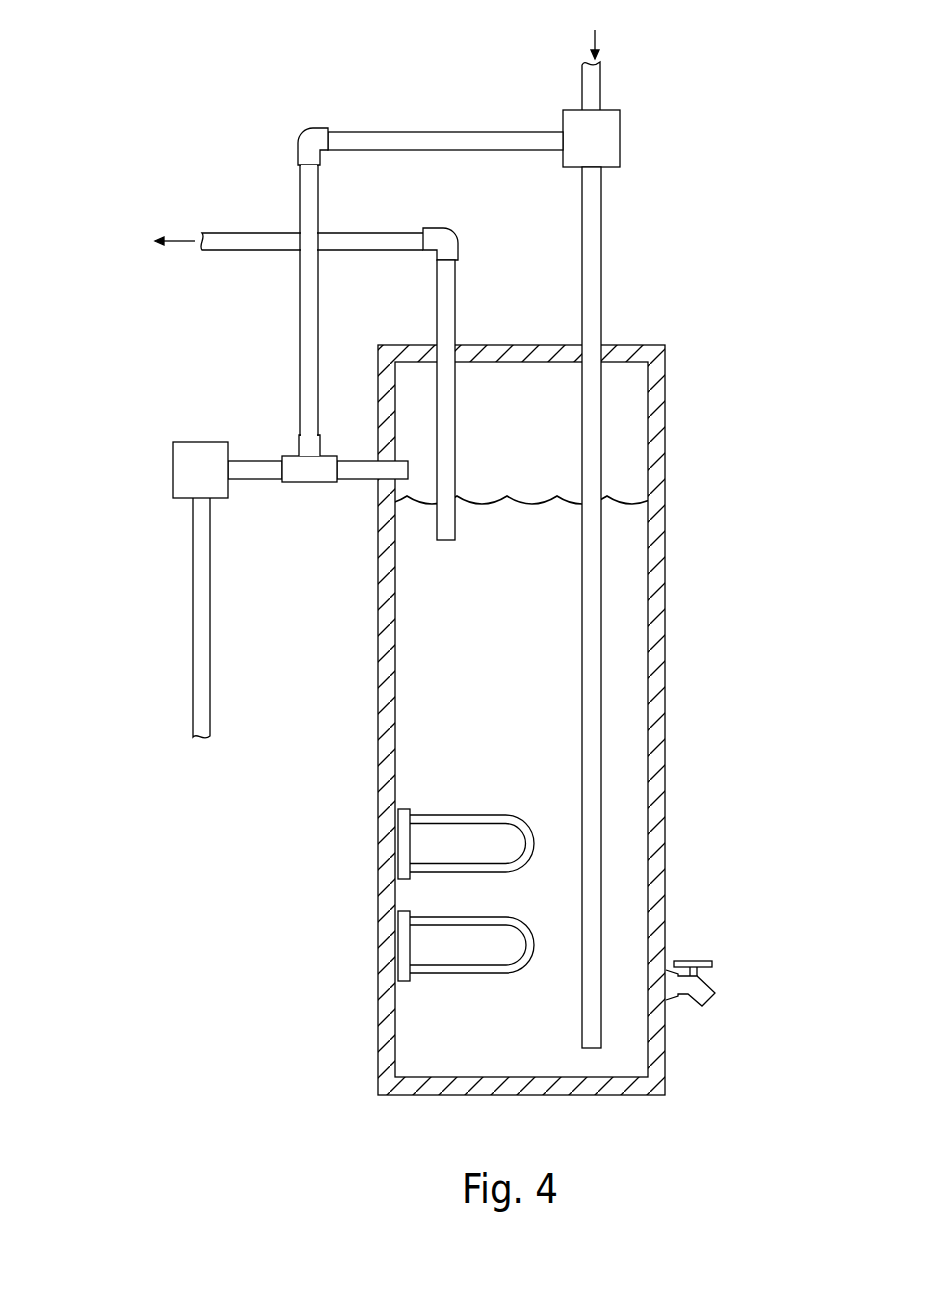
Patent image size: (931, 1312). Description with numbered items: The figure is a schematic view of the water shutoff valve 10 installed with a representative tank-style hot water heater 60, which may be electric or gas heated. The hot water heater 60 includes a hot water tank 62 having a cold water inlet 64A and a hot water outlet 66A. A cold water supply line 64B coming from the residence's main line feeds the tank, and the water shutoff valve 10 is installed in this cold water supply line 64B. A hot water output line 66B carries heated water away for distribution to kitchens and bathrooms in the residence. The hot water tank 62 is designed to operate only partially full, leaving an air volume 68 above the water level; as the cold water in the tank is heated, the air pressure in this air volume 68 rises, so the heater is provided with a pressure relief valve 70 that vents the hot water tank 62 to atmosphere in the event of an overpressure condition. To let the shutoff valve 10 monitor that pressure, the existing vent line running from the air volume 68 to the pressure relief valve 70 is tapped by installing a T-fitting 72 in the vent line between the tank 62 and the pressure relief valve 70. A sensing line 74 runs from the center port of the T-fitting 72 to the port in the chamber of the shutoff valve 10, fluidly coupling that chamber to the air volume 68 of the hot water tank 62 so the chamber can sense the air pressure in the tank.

The water shutoff valve 10 is at (621, 140).
The tank-style hot water heater 60 is at (435, 550).
The hot water tank 62 is at (667, 861).
The cold water inlet 64A is at (602, 316).
The cold water supply line 64B is at (601, 84).
The hot water outlet 66A is at (457, 337).
The hot water output line 66B is at (232, 231).
The air volume 68 is at (553, 462).
The pressure relief valve 70 is at (172, 470).
The tee fitting 72 is at (300, 484).
The sensing line 74 is at (300, 333).